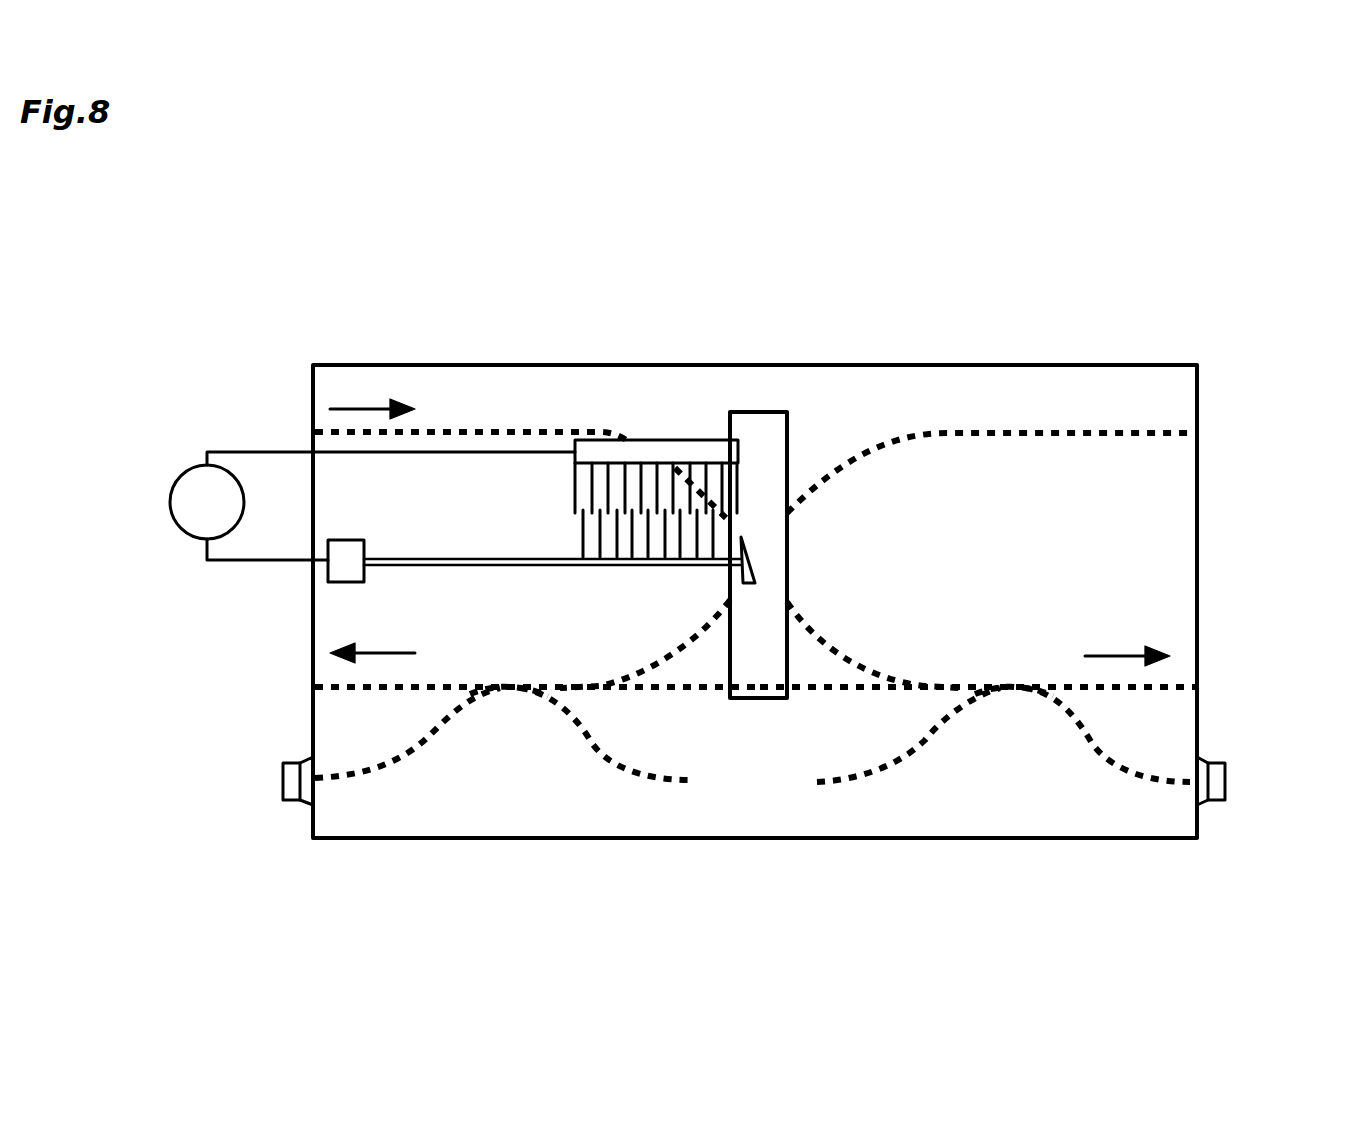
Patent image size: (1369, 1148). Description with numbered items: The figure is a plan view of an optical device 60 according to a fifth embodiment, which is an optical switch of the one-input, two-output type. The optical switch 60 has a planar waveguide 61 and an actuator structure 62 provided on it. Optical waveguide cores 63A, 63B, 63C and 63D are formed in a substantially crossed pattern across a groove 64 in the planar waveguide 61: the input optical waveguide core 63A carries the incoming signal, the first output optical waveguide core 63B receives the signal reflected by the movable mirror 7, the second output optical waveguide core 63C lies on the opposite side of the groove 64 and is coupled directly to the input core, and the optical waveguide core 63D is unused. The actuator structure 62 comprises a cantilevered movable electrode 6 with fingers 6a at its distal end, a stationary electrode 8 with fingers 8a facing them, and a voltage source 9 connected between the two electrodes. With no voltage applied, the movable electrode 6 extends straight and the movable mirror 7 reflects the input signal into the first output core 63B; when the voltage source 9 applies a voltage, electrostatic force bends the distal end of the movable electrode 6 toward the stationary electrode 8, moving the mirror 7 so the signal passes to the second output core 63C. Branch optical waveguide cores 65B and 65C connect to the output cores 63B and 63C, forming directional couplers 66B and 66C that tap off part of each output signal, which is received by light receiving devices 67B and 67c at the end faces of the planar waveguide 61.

The optical device 60 is at (898, 237).
The planar waveguide 61 is at (1126, 378).
The actuator structure 62 is at (600, 582).
The input optical waveguide core 63A is at (497, 425).
The first output optical waveguide core 63B is at (394, 694).
The second output optical waveguide core 63C is at (1145, 692).
The unused optical waveguide core 63D is at (1000, 430).
The groove 64 is at (757, 435).
The branch optical waveguide core 65B is at (387, 772).
The branch optical waveguide core 65C is at (898, 770).
The directional coupler 66B is at (507, 698).
The directional coupler 66C is at (1022, 708).
The light receiving device 67B is at (291, 805).
The light receiving device 67c is at (1225, 786).
The movable electrode 6 is at (488, 566).
The fingers 6a is at (580, 532).
The movable mirror 7 is at (775, 555).
The stationary electrode 8 is at (693, 458).
The fingers 8a is at (574, 485).
The voltage source 9 is at (170, 502).